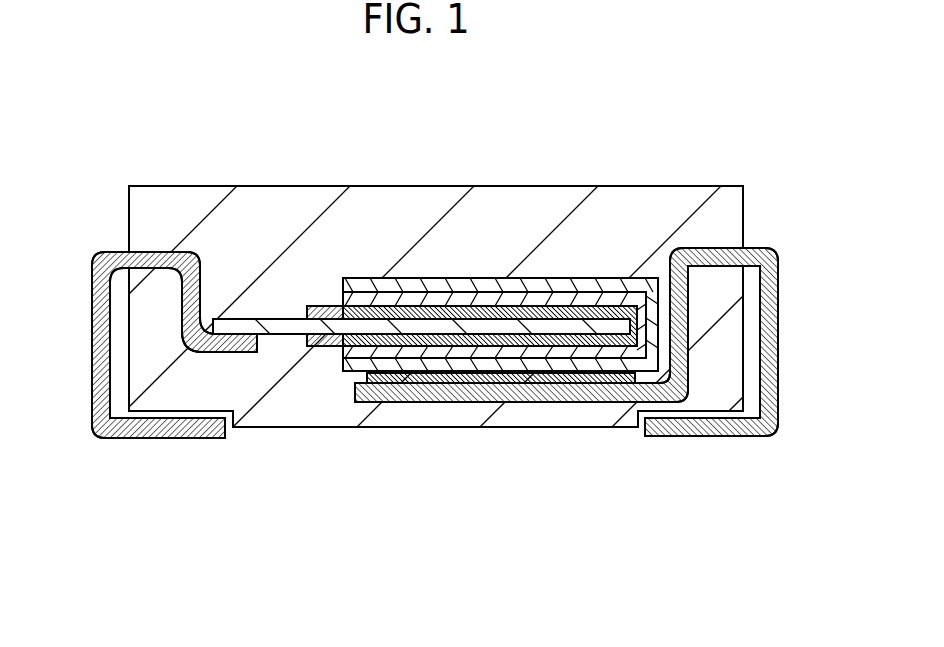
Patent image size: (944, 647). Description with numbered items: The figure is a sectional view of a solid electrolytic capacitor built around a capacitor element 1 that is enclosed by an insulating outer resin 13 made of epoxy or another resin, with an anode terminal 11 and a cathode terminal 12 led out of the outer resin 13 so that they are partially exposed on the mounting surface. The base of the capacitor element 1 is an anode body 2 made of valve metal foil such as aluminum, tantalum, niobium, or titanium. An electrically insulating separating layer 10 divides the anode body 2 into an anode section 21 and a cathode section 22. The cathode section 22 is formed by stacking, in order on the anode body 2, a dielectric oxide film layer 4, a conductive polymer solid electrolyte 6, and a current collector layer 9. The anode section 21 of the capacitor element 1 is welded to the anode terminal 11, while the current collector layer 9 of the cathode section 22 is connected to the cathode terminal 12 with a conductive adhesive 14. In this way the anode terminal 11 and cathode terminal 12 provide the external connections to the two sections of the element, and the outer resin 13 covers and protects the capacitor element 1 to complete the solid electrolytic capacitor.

The capacitor element 1 is at (214, 318).
The anode body 2 is at (563, 323).
The dielectric oxide film layer 4 is at (417, 343).
The solid electrolyte 6 is at (475, 350).
The current collector layer 9 is at (520, 362).
The separating layer 10 is at (333, 345).
The anode terminal 11 is at (92, 288).
The cathode terminal 12 is at (778, 293).
The outer resin 13 is at (267, 213).
The conductive adhesive 14 is at (615, 317).
The anode section 21 is at (278, 325).
The cathode section 22 is at (500, 422).